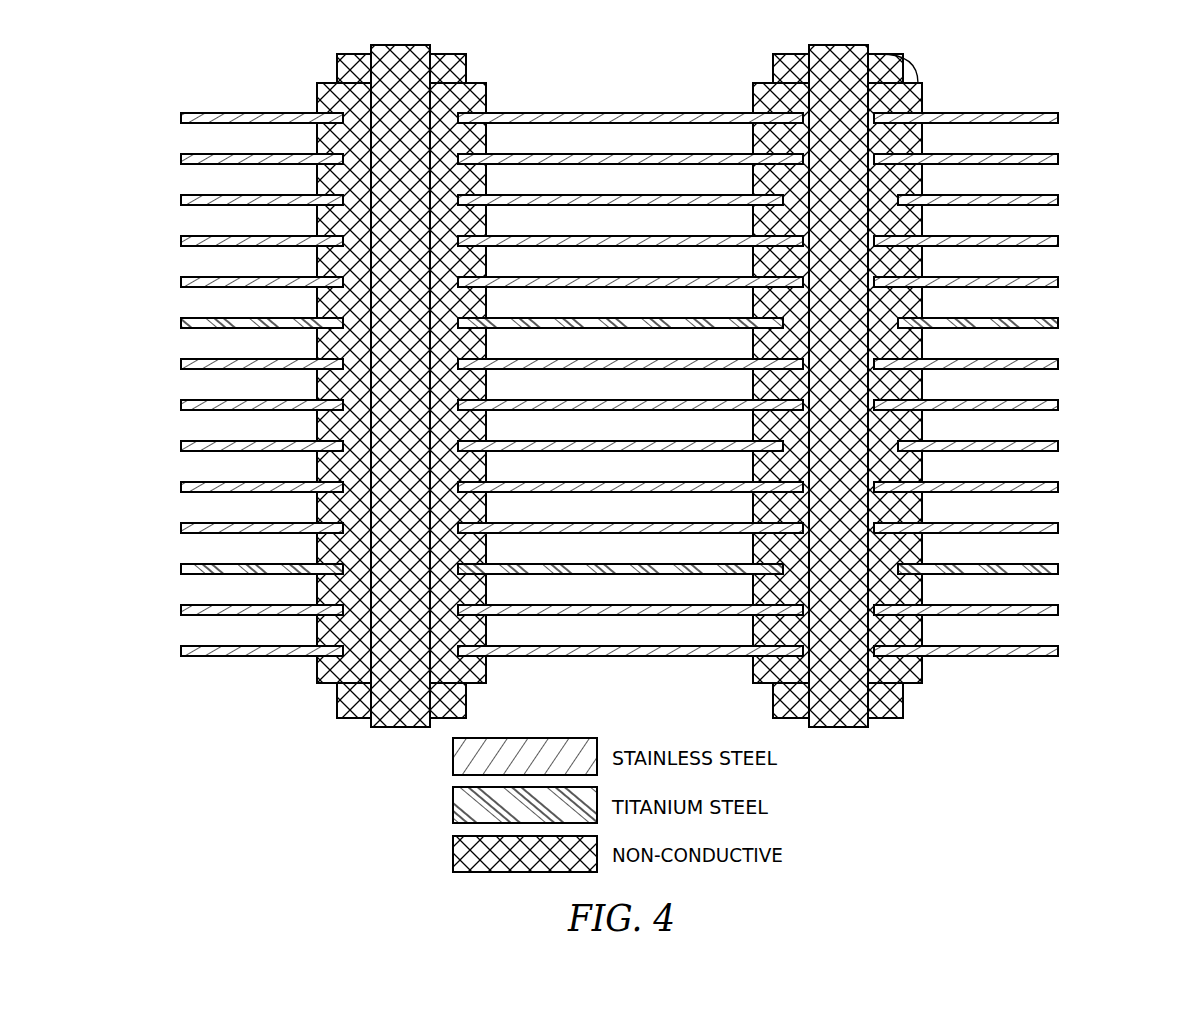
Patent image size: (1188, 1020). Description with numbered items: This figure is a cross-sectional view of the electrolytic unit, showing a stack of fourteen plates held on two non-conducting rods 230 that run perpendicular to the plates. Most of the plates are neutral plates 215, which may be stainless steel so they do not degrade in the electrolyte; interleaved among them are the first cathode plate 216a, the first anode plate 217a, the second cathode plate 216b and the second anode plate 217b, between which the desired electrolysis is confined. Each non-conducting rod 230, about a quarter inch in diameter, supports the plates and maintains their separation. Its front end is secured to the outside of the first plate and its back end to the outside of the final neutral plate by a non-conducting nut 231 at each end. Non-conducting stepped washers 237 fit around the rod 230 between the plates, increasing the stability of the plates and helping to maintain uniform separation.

The non-conducting rod 230 is at (395, 46).
The non-conducting nut 231 is at (348, 71).
The non-conducting stepped washer 237 is at (458, 72).
The neutral plate 215 is at (1065, 119).
The second anode plate 217b is at (1065, 201).
The second cathode plate 216b is at (178, 323).
The first anode plate 217a is at (1065, 447).
The first cathode plate 216a is at (178, 529).